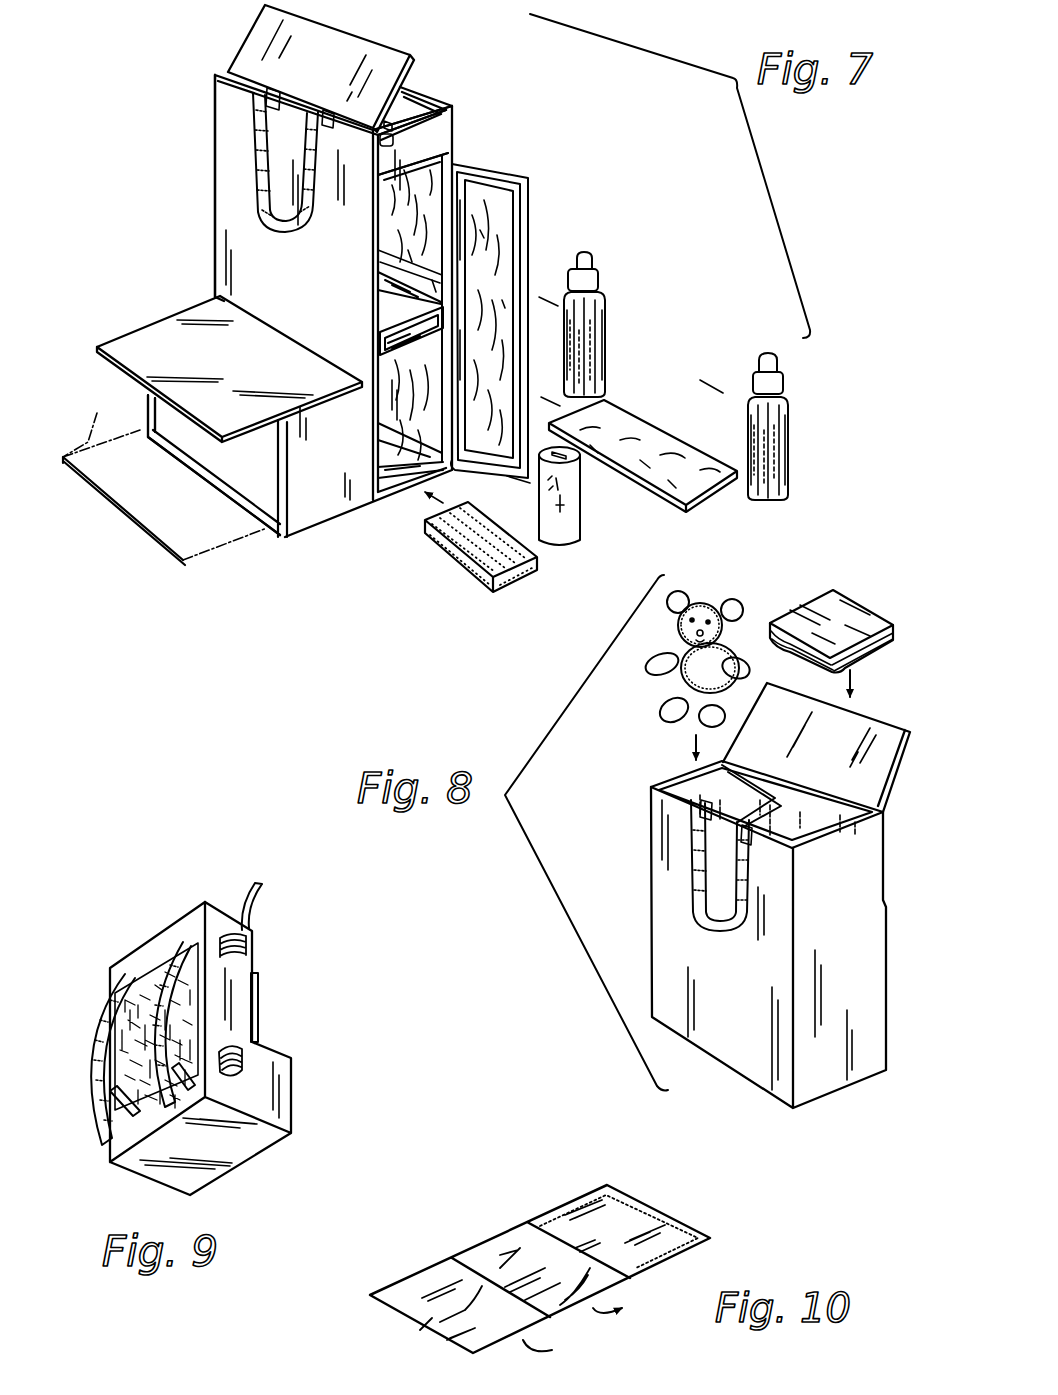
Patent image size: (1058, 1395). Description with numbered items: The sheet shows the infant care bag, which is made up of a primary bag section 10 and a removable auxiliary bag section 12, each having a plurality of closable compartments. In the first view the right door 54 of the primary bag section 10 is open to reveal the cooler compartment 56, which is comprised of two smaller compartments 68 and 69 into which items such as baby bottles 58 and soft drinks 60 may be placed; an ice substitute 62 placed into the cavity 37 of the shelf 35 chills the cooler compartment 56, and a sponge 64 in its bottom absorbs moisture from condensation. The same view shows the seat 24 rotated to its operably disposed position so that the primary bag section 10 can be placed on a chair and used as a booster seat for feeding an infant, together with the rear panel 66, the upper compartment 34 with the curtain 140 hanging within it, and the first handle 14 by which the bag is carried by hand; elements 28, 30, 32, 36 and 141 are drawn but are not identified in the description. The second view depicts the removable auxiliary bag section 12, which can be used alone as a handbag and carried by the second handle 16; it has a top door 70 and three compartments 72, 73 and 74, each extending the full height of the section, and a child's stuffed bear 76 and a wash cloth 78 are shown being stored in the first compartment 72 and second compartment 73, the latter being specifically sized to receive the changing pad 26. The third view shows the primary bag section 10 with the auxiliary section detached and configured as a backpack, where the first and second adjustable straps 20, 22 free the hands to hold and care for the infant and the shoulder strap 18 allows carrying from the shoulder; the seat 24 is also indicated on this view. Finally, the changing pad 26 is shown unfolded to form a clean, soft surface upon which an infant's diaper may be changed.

In FIG. 7, the primary bag section 10 is at (315, 537).
In FIG. 9, the primary bag section 10 is at (297, 1116).
In FIG. 8, the removable auxiliary bag section 12 is at (748, 1060).
In FIG. 7, the first handle 14 is at (263, 193).
In FIG. 8, the second handle 16 is at (713, 930).
In FIG. 9, the shoulder strap 18 is at (265, 891).
In FIG. 9, the first adjustable strap 20 is at (97, 1007).
In FIG. 9, the second adjustable strap 22 is at (165, 955).
In FIG. 7, the seat 24 is at (150, 333).
In FIG. 9, the seat 24 is at (260, 993).
In FIG. 10, the changing pad 26 is at (498, 1240).
In FIG. 7, the lid 28 is at (263, 37).
In FIG. 9, the strap slot 30 is at (248, 940).
In FIG. 7, the slide-out panel 32 is at (170, 420).
In FIG. 7, the upper compartment 34 is at (415, 94).
In FIG. 7, the shelf 35 is at (393, 303).
In FIG. 9, the strap slot 36 is at (244, 1060).
In FIG. 7, the cavity 37 is at (393, 339).
In FIG. 7, the right door 54 is at (510, 168).
In FIG. 7, the cooler compartment 56 is at (424, 206).
In FIG. 7, the baby bottles 58 is at (597, 307).
In FIG. 7, the soft drinks 60 is at (573, 507).
In FIG. 7, the ice substitute 62 is at (700, 483).
In FIG. 7, the sponge 64 is at (460, 553).
In FIG. 7, the rear panel 66 is at (235, 233).
In FIG. 7, the smaller compartment 68 is at (386, 258).
In FIG. 7, the smaller compartment 69 is at (393, 403).
In FIG. 8, the top door 70 is at (880, 733).
In FIG. 8, the first compartment 72 is at (673, 783).
In FIG. 8, the second compartment 73 is at (797, 830).
In FIG. 8, the third compartment 74 is at (765, 790).
In FIG. 8, the stuffed bear 76 is at (703, 603).
In FIG. 8, the wash cloth 78 is at (857, 613).
In FIG. 7, the curtain 140 is at (386, 214).
In FIG. 7, the door liner panel 141 is at (493, 227).